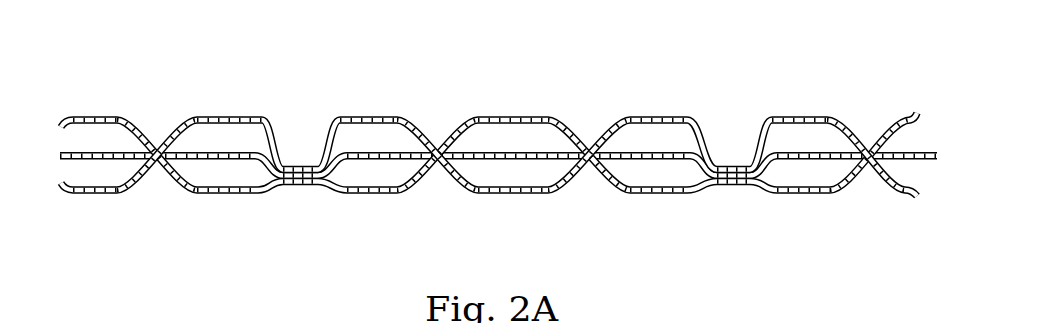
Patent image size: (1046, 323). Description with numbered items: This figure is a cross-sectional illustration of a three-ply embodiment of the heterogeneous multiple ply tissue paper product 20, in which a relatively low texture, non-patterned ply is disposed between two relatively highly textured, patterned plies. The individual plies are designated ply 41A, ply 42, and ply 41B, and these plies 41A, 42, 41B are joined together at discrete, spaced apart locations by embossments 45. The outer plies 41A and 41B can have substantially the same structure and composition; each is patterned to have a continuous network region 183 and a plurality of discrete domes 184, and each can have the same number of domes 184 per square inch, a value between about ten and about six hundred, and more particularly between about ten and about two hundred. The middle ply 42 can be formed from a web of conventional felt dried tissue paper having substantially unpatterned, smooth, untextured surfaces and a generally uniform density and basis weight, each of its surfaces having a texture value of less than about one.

The heterogeneous multiple ply tissue paper product 20 is at (492, 150).
The ply 41A is at (50, 107).
The ply 41B is at (67, 212).
The ply 42 is at (101, 172).
The embossments 45 is at (300, 140).
The continuous network region 183 is at (230, 116).
The discrete domes 184 is at (158, 140).